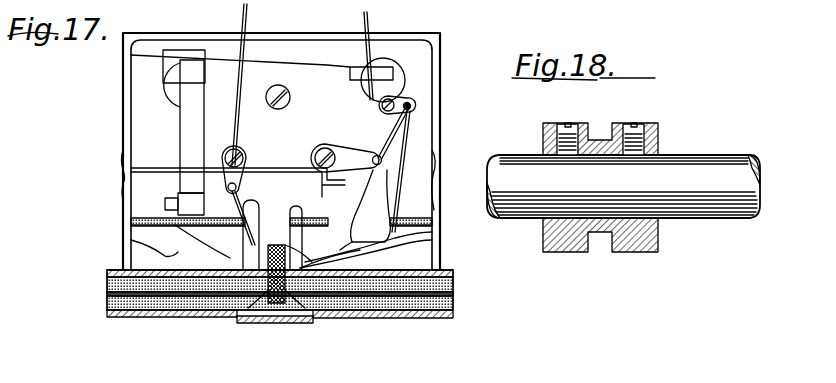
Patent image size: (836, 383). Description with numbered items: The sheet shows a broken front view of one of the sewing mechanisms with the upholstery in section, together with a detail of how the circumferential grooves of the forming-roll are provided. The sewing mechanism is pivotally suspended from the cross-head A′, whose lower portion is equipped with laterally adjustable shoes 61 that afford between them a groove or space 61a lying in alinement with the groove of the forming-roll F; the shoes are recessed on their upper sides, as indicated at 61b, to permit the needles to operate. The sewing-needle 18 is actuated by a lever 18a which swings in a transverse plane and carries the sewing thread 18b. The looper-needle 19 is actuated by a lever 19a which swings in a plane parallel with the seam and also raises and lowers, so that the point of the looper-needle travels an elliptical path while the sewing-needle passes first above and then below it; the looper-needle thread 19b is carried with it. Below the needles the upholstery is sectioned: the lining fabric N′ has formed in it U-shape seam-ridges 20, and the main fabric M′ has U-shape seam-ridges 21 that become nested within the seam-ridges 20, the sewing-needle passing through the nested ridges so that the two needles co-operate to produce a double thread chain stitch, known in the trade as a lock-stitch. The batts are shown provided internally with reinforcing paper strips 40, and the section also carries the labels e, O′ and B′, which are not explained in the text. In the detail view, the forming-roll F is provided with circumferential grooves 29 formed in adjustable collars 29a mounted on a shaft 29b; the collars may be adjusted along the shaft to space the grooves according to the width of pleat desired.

In FIG. 17, the looper-needle thread 19b is at (231, 34).
In FIG. 17, the sewing thread 18b is at (372, 34).
In FIG. 17, the cross-head A′ is at (440, 66).
In FIG. 17, the housing part e is at (101, 102).
In FIG. 17, the lever 19a is at (183, 148).
In FIG. 17, the looper-needle 19 is at (248, 207).
In FIG. 17, the seam-ridges 20 is at (274, 245).
In FIG. 17, the lever 18a is at (393, 153).
In FIG. 17, the sewing-needle 18 is at (340, 233).
In FIG. 17, the recess 61b is at (479, 171).
In FIG. 17, the shoes 61 is at (135, 252).
In FIG. 17, the groove 61a is at (252, 262).
In FIG. 17, the lining fabric N′ is at (112, 270).
In FIG. 17, the middle layer O′ is at (110, 287).
In FIG. 17, the reinforcing paper strips 40 is at (107, 318).
In FIG. 17, the main fabric M′ is at (163, 318).
In FIG. 17, the seam-ridges 21 is at (245, 305).
In FIG. 17, the bracket B′ is at (288, 262).
In FIG. 17, the forming-roll F is at (524, 112).
In FIG. 18, the circumferential grooves 29 is at (600, 133).
In FIG. 18, the adjustable collars 29a is at (612, 253).
In FIG. 18, the shaft 29b is at (723, 205).